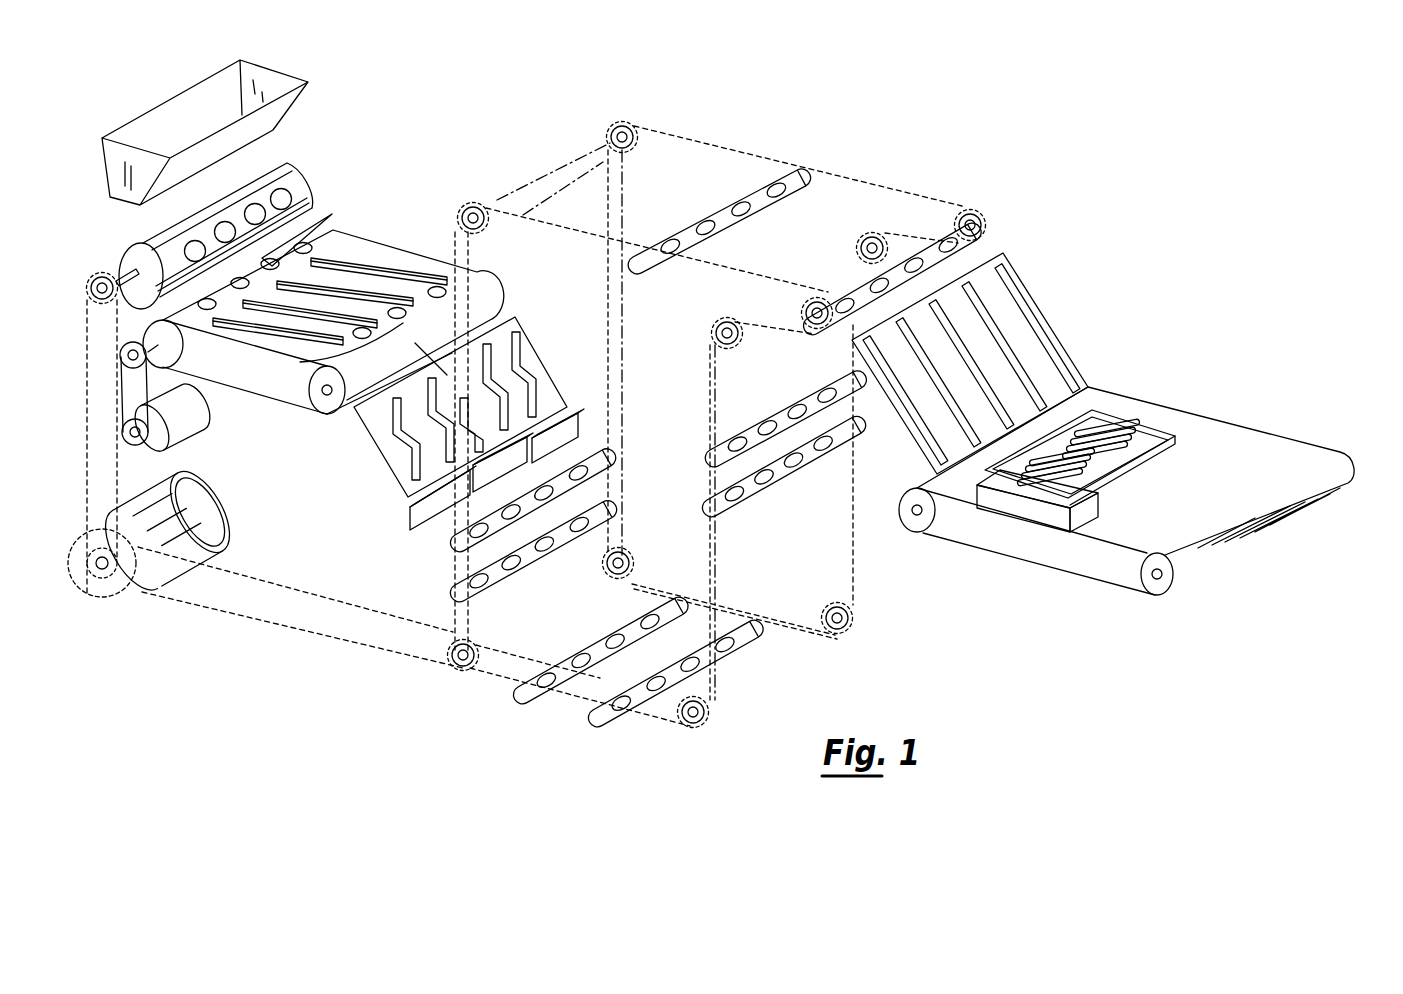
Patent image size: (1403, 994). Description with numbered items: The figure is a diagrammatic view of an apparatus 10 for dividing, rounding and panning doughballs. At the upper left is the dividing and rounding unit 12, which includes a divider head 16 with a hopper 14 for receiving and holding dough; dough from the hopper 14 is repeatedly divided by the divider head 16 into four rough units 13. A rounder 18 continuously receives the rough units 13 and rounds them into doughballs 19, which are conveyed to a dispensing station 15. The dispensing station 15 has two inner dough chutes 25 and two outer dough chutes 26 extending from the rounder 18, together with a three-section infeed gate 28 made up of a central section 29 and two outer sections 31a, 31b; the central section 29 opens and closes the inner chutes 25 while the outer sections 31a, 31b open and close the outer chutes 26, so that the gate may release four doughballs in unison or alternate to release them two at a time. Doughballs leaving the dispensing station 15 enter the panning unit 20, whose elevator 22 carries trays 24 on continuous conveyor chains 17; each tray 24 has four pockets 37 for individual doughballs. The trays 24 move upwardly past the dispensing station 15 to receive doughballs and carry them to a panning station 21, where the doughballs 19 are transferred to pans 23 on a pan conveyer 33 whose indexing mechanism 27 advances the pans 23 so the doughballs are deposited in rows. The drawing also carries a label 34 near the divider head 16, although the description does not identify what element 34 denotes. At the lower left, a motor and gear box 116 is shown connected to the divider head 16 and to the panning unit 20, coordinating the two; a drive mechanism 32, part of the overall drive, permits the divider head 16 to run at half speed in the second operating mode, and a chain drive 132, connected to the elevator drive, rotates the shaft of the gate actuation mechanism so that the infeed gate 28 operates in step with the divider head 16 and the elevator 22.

The apparatus 10 is at (680, 107).
The dividing and rounding unit 12 is at (383, 212).
The rough units 13 is at (333, 214).
The hopper 14 is at (282, 80).
The dispensing station 15 is at (547, 357).
The divider head 16 is at (313, 178).
The continuous conveyor chains 17 is at (608, 342).
The rounder 18 is at (390, 242).
The doughballs 19 is at (308, 386).
The panning unit 20 is at (845, 152).
The panning station 21 is at (1103, 372).
The elevator 22 is at (630, 472).
The pans 23 is at (1127, 418).
The trays 24 is at (647, 682).
The inner dough chutes 25 is at (428, 346).
The outer dough chutes 26 is at (505, 337).
The indexing mechanism 27 is at (1013, 507).
The infeed gate 28 is at (403, 500).
The central section 29 is at (502, 464).
The outer section 31a is at (578, 426).
The outer section 31b is at (410, 522).
The drive mechanism 32 is at (228, 543).
The pan conveyer 33 is at (1227, 440).
The drum surface 34 is at (267, 177).
The pockets 37 is at (583, 530).
The motor and gear box 116 is at (207, 498).
The chain drive 132 is at (208, 422).